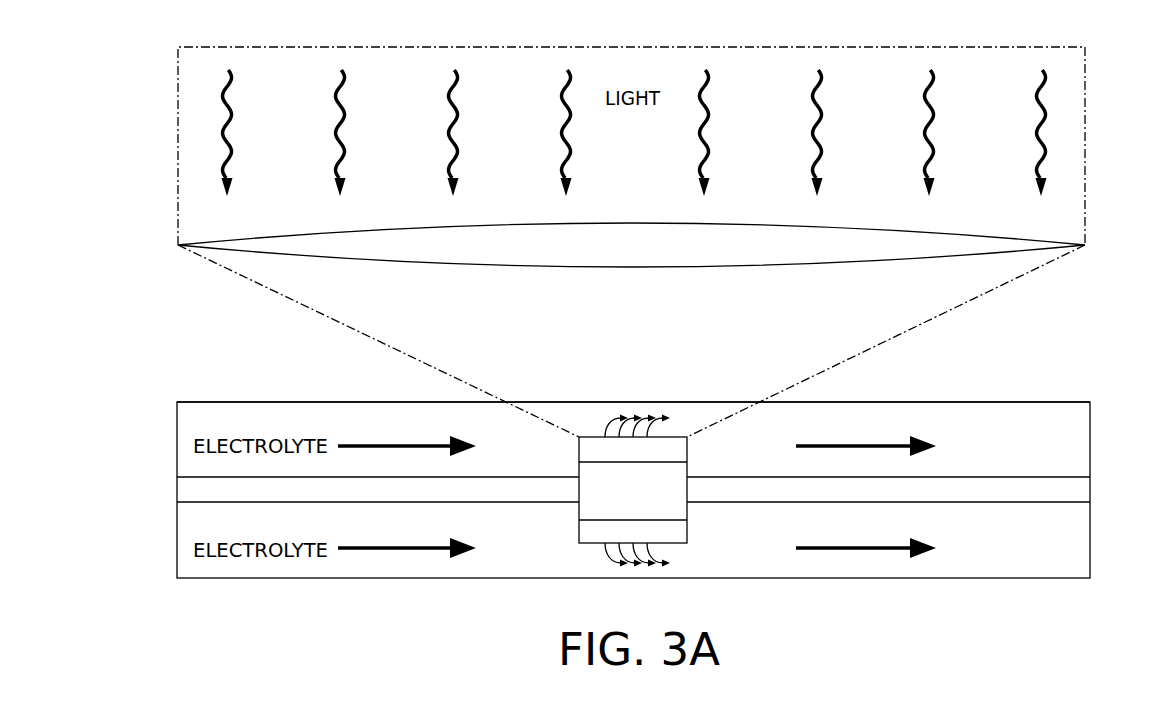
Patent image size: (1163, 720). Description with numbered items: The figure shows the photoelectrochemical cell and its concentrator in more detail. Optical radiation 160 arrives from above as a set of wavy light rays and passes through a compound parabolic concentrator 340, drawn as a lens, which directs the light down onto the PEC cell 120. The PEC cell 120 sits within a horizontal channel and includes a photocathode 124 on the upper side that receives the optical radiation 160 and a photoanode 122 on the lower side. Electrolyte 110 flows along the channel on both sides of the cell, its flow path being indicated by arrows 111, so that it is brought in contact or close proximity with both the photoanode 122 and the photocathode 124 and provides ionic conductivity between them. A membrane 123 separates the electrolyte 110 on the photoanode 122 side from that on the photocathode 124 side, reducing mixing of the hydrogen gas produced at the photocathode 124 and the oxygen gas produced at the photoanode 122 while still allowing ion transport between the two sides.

The electrolyte 110 is at (248, 440).
The arrows 111 is at (368, 443).
The PEC cell 120 is at (690, 452).
The photoanode 122 is at (687, 528).
The membrane 123 is at (503, 477).
The photocathode 124 is at (595, 437).
The optical radiation 160 is at (1048, 140).
The compound parabolic concentrator 340 is at (1085, 245).